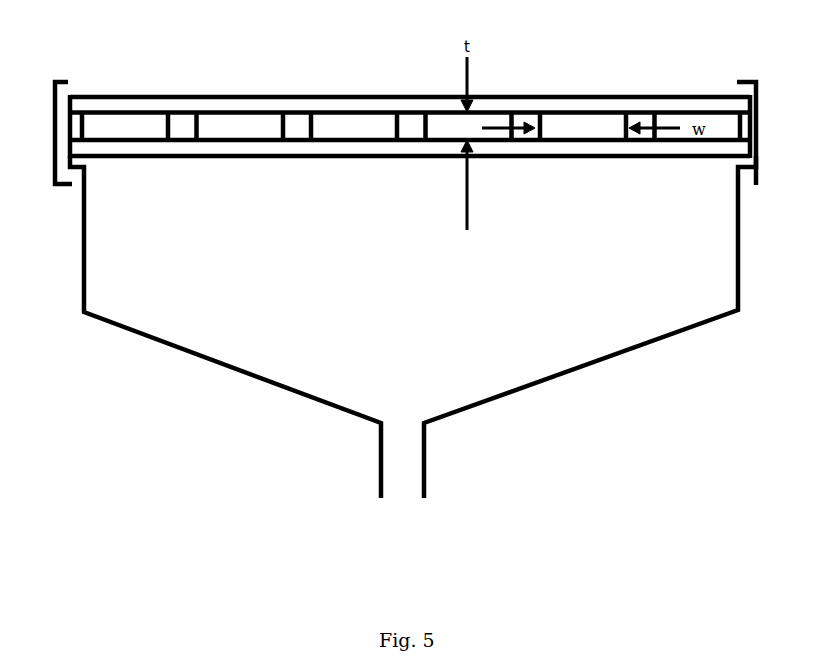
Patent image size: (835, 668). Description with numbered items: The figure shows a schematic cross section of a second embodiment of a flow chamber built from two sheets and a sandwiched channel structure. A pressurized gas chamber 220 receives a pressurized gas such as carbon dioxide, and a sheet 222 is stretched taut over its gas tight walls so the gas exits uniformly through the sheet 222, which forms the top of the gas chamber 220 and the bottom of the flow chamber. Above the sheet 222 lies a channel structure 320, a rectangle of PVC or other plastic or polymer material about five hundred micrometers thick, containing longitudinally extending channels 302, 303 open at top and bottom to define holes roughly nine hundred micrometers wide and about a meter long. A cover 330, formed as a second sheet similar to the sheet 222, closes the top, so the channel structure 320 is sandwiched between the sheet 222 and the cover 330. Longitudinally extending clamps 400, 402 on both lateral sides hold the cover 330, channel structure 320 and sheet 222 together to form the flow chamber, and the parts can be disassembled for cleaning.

The pressurized gas chamber 220 is at (269, 282).
The sheet 222 is at (353, 140).
The channel 302 is at (127, 128).
The channel 303 is at (240, 128).
The channel structure 320 is at (296, 127).
The cover 330 is at (365, 115).
The clamp 400 is at (756, 184).
The clamp 402 is at (56, 186).